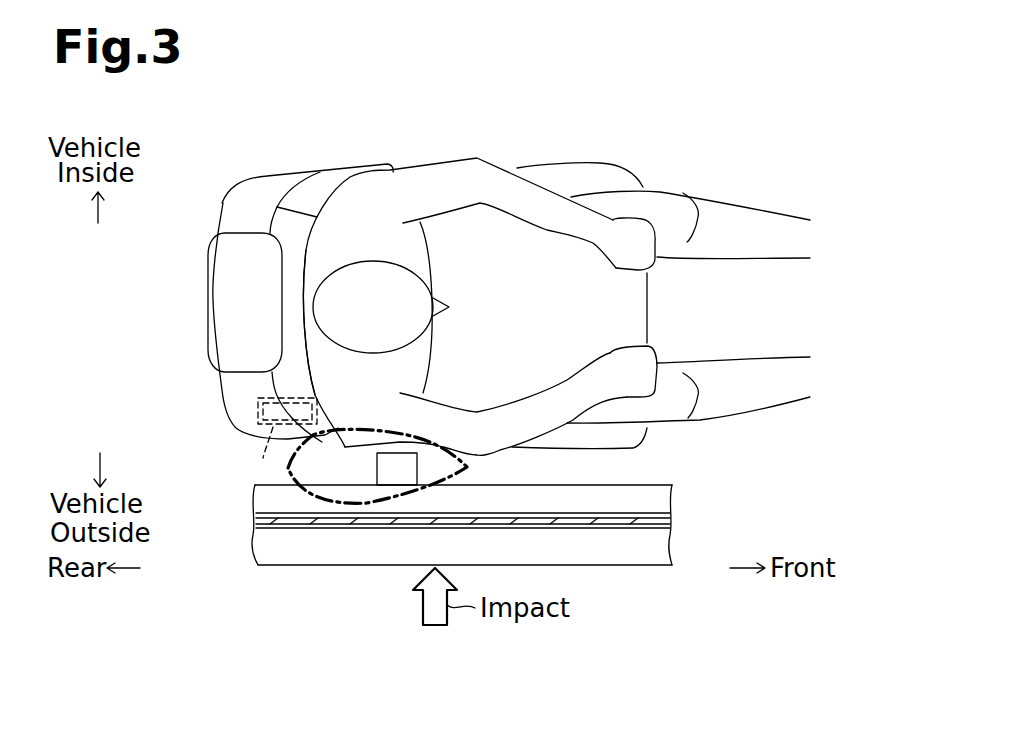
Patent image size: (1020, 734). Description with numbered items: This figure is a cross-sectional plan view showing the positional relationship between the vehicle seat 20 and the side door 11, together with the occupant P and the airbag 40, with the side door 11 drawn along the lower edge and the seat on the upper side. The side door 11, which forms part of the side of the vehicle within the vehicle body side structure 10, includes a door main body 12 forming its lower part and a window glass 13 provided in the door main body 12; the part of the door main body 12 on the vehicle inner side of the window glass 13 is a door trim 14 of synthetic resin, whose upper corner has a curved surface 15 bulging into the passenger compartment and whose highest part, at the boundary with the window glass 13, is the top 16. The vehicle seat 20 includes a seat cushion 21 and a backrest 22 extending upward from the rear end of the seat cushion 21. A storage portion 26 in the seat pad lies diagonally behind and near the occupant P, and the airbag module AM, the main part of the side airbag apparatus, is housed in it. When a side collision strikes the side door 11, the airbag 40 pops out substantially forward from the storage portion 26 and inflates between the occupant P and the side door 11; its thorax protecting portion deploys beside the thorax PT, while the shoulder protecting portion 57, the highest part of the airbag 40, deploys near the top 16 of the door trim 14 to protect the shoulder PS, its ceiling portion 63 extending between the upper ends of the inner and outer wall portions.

The vehicle body side structure 10 is at (431, 538).
The side door 11 is at (431, 538).
The door main body 12 is at (642, 553).
The window glass 13 is at (499, 534).
The door trim 14 is at (665, 480).
The curved surface 15 is at (647, 497).
The top 16 is at (377, 505).
The vehicle seat 20 is at (243, 303).
The seat cushion 21 is at (637, 303).
The backrest 22 is at (237, 209).
The storage portion 26 is at (258, 407).
The airbag 40 is at (459, 466).
The shoulder protecting portion 57 is at (397, 470).
The ceiling portion 63 is at (470, 458).
The occupant P is at (443, 322).
The thorax PT is at (413, 363).
The shoulder PS is at (341, 418).
The airbag module AM is at (267, 456).